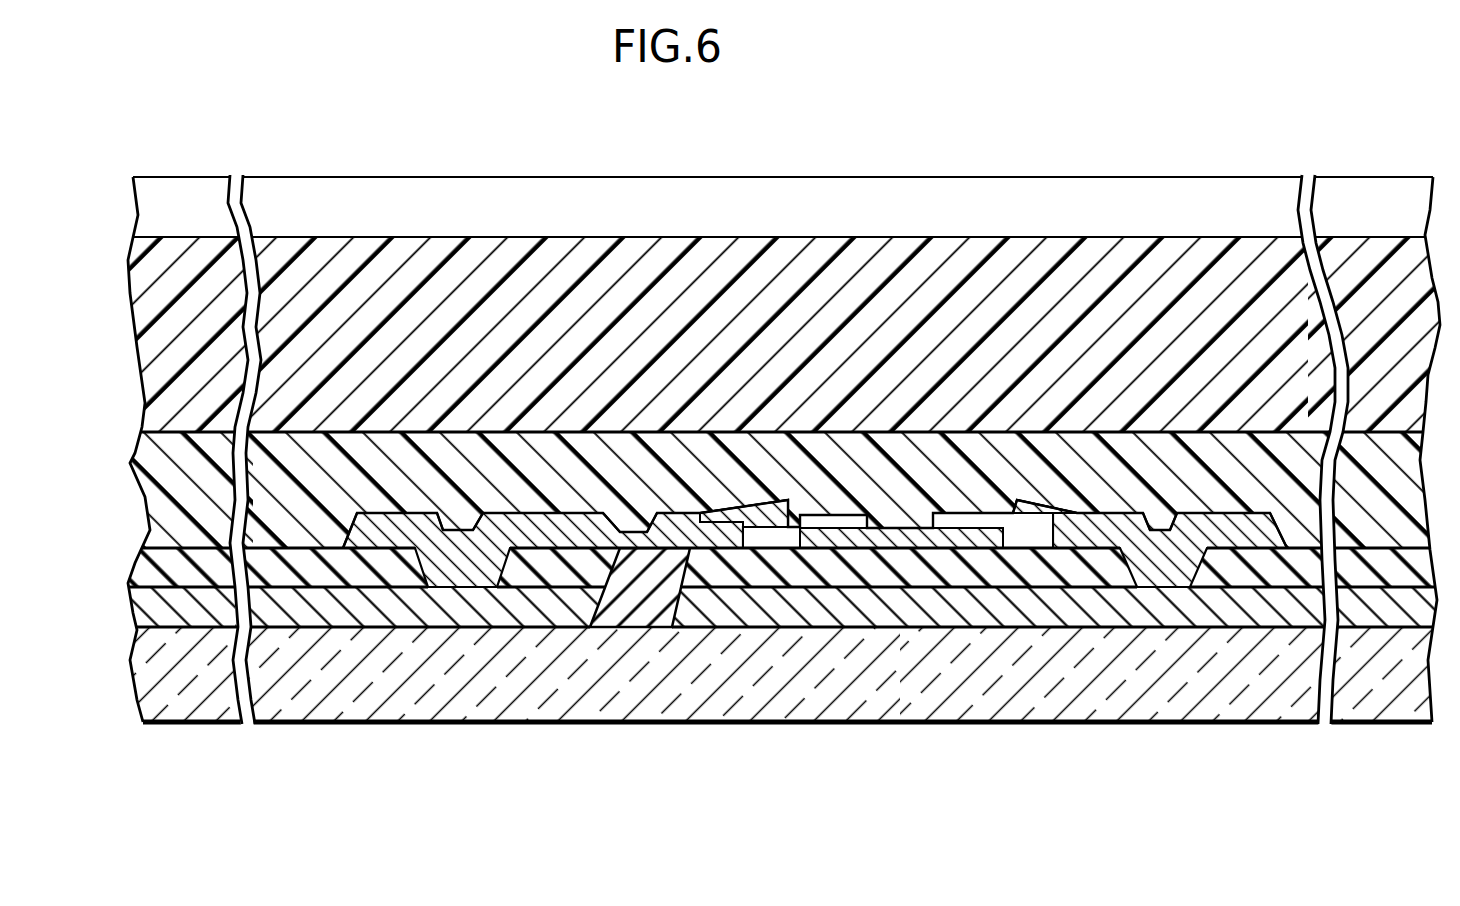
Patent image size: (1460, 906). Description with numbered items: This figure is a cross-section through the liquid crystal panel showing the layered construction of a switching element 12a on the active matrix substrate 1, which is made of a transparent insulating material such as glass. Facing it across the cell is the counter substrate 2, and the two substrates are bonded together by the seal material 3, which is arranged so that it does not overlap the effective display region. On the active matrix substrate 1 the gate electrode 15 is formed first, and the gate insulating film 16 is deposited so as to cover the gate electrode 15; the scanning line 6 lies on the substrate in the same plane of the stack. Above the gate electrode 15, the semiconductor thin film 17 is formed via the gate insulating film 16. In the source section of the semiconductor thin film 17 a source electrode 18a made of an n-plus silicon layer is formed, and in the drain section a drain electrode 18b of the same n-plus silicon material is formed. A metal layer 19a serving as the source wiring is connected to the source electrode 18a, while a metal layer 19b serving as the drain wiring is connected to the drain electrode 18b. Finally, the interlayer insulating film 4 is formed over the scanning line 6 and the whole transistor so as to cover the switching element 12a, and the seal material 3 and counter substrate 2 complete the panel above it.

The active matrix substrate 1 is at (790, 697).
The counter substrate 2 is at (740, 208).
The seal material 3 is at (845, 298).
The interlayer insulating film 4 is at (565, 455).
The scanning line 6 is at (197, 612).
The switching element 12a is at (943, 527).
The gate electrode 15 is at (553, 605).
The gate insulating film 16 is at (513, 553).
The semiconductor thin film 17 is at (905, 503).
The source electrode 18a is at (987, 527).
The drain electrode 18b is at (795, 527).
The metal layer 19a is at (1083, 530).
The metal layer 19b is at (682, 523).